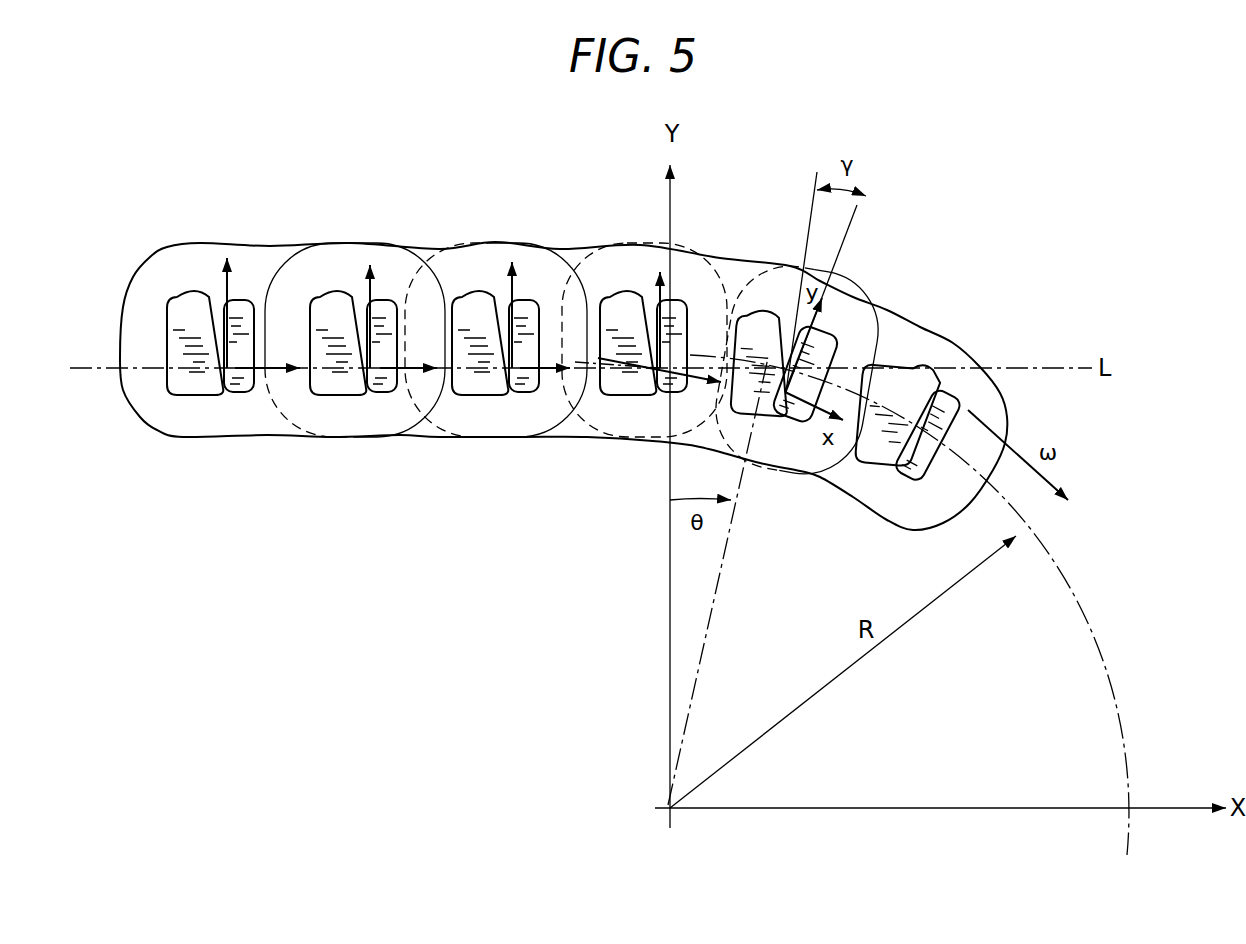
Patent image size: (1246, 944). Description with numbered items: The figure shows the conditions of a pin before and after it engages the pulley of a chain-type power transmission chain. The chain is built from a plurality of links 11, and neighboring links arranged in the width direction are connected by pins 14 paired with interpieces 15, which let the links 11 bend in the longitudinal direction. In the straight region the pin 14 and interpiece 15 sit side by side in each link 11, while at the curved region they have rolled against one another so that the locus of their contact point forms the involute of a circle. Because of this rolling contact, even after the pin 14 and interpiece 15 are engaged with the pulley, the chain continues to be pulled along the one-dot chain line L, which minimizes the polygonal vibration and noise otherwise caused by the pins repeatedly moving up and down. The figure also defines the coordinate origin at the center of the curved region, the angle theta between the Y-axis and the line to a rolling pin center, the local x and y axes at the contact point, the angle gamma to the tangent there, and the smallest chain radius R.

The link 11 is at (262, 418).
The pin 14 is at (333, 310).
The interpiece 15 is at (387, 310).